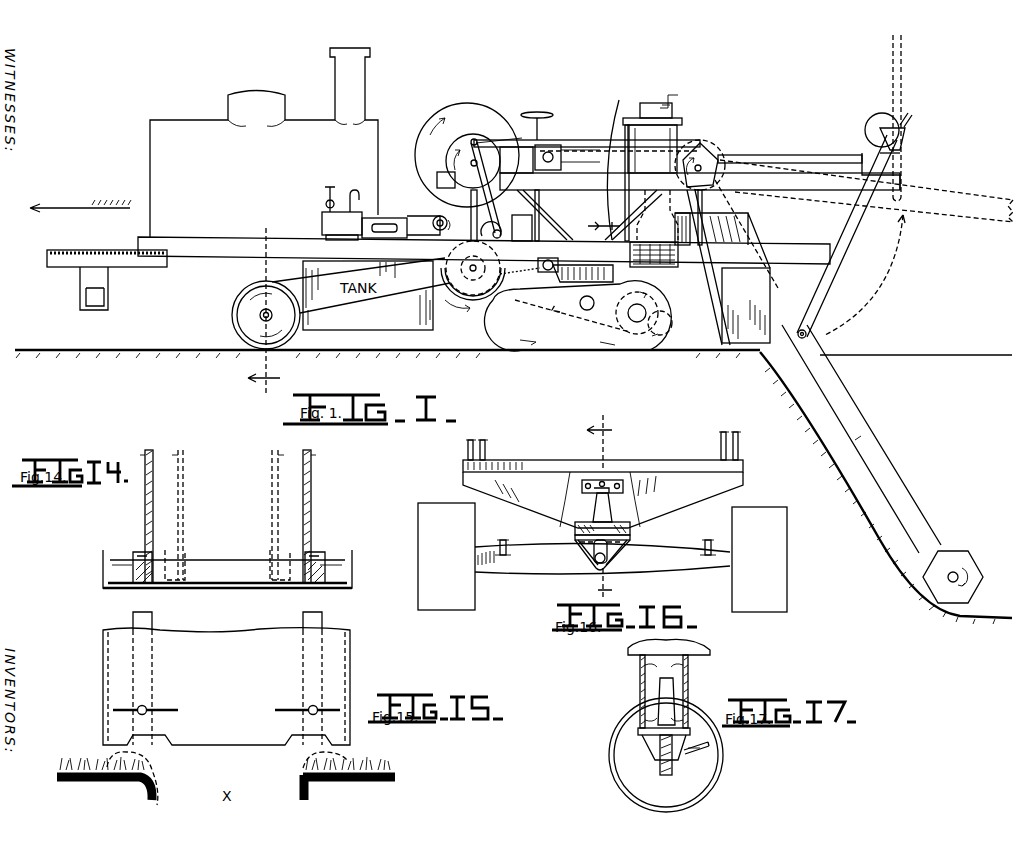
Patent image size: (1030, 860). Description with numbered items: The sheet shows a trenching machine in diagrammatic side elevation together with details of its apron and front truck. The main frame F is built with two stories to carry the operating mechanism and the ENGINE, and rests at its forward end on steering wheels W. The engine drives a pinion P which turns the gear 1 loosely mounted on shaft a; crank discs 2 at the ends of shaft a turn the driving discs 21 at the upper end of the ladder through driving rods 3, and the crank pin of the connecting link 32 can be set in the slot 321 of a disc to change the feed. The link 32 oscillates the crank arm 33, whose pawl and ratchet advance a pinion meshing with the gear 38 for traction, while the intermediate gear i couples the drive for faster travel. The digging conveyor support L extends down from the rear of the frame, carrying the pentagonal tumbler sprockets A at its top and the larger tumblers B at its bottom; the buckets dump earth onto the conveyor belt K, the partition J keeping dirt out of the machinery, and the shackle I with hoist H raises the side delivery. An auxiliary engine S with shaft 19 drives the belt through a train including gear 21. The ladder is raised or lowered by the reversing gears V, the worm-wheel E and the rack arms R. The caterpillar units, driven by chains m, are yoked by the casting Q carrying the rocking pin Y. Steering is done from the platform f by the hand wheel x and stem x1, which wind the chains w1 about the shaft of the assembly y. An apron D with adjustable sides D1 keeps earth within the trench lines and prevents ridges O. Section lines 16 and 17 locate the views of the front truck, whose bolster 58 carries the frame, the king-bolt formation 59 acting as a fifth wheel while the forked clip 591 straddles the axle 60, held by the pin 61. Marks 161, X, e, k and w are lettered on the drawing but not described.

In FIG. 1, the gear 1 is at (466, 104).
In FIG. 1, the crank discs 2 is at (473, 153).
In FIG. 1, the intermediate gear-wheel 21 is at (706, 140).
In FIG. 1, the driving rods 3 is at (584, 138).
In FIG. 1, the section line 16— 16 is at (276, 308).
In FIG. 1, the section arrow 161 is at (264, 390).
In FIG. 16, the section line 17— 17 is at (604, 505).
In FIG. 1, the shaft 19 is at (604, 231).
In FIG. 1, the connecting link 32 is at (516, 160).
In FIG. 1, the slot 321 is at (470, 135).
In FIG. 1, the crank arm 33 is at (486, 215).
In FIG. 1, the gear 38 is at (462, 301).
In FIG. 16, the bolster 58 is at (542, 485).
In FIG. 17, the bolster 58 is at (640, 682).
In FIG. 16, the king-bolt formation 59 is at (590, 505).
In FIG. 17, the king-bolt formation 59 is at (670, 700).
In FIG. 16, the forked clip portion 591 is at (597, 552).
In FIG. 17, the forked clip portion 591 is at (688, 756).
In FIG. 16, the axle 60 is at (665, 555).
In FIG. 17, the axle 60 is at (662, 770).
In FIG. 16, the pin 61 is at (620, 562).
In FIG. 17, the pin 61 is at (650, 748).
In FIG. 1, the tumbler sprocket wheels A is at (712, 158).
In FIG. 1, the tumbler sprocket wheels B is at (958, 555).
In FIG. 1, the apron D is at (712, 300).
In FIG. 14, the apron D is at (222, 568).
In FIG. 15, the apron D is at (220, 728).
In FIG. 1, the adjustable sides D1 is at (746, 261).
In FIG. 14, the adjustable sides D1 is at (185, 512).
In FIG. 15, the adjustable sides D1 is at (152, 618).
In FIG. 1, the worm-wheel E is at (868, 125).
In FIG. 1, the main frame F is at (200, 256).
In FIG. 16, the main frame F is at (488, 445).
In FIG. 17, the main frame F is at (712, 656).
In FIG. 1, the hoist H is at (652, 102).
In FIG. 1, the shackle I is at (657, 215).
In FIG. 1, the partition J is at (624, 197).
In FIG. 1, the conveyor belt K is at (668, 268).
In FIG. 1, the digging conveyor support L is at (965, 215).
In FIG. 15, the ridges O is at (112, 760).
In FIG. 1, the pinion P is at (437, 217).
In FIG. 1, the casting Q is at (614, 270).
In FIG. 1, the rack arms R is at (905, 95).
In FIG. 1, the auxiliary motor or engine S is at (522, 228).
In FIG. 1, the reversing bevel gears V is at (548, 145).
In FIG. 1, the steering wheels W is at (234, 314).
In FIG. 16, the steering wheels W is at (780, 582).
In FIG. 17, the steering wheels W is at (725, 760).
In FIG. 1, the trench X is at (786, 368).
In FIG. 1, the rocking pin Y is at (583, 310).
In FIG. 1, the shaft a is at (485, 187).
In FIG. 1, the arm e is at (781, 156).
In FIG. 1, the platform f is at (613, 161).
In FIG. 1, the intermediate gear i is at (503, 236).
In FIG. 1, the pulley k is at (446, 272).
In FIG. 1, the chains m is at (598, 320).
In FIG. 1, the belt w is at (405, 297).
In FIG. 16, the belt w is at (495, 546).
In FIG. 17, the belt w is at (700, 745).
In FIG. 1, the chains w1 is at (520, 278).
In FIG. 1, the hand wheel x is at (538, 112).
In FIG. 1, the stem x1 is at (545, 215).
In FIG. 1, the worm, worm wheel and shaft assembly y is at (552, 272).
In FIG. 1, the engine ENGINE is at (317, 220).